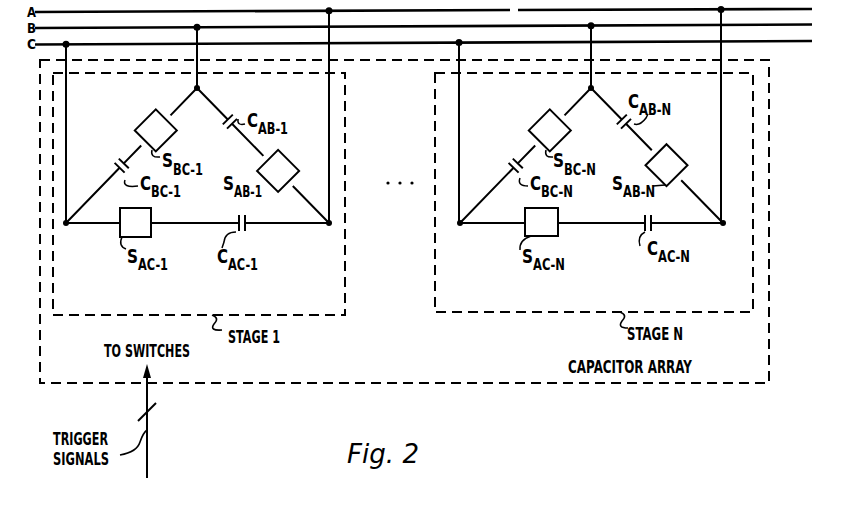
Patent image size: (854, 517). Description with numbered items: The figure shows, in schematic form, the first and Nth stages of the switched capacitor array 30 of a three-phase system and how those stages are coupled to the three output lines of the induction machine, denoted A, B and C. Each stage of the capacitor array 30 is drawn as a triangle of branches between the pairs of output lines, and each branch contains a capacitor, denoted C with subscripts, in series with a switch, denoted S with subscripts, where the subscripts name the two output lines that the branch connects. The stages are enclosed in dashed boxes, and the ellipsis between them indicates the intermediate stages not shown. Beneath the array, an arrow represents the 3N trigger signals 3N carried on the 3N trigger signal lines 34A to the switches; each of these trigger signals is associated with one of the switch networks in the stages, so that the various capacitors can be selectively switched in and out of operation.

The capacitor array 30 is at (400, 383).
The trigger signal lines 34A is at (147, 456).
The trigger signals 3N is at (160, 414).